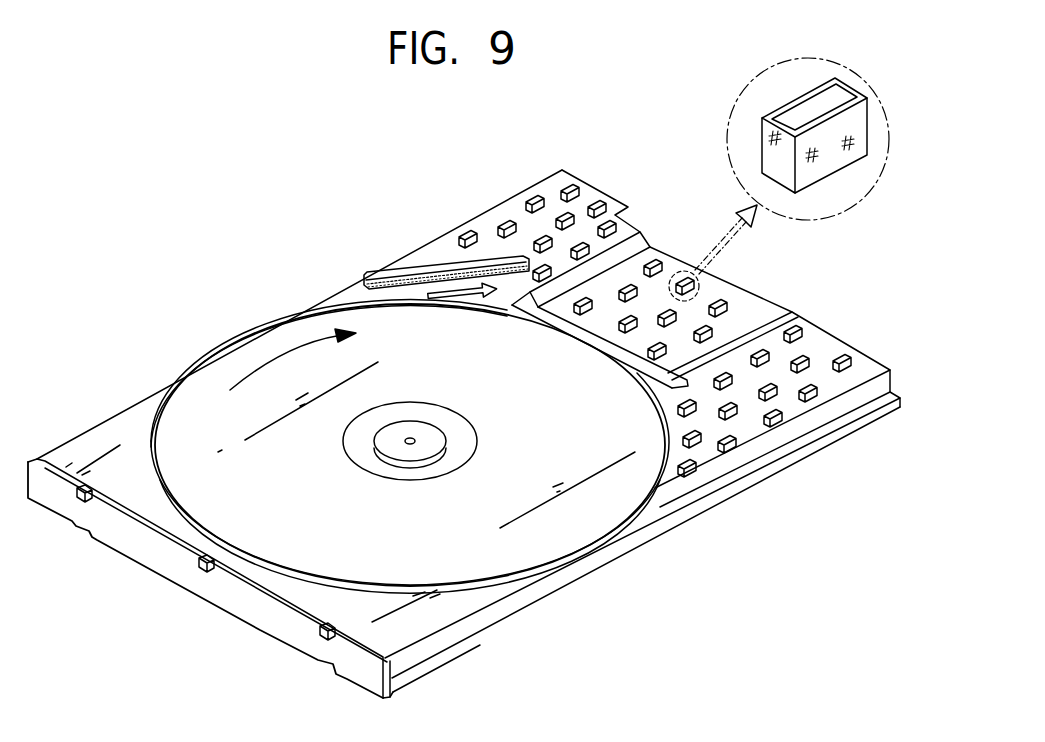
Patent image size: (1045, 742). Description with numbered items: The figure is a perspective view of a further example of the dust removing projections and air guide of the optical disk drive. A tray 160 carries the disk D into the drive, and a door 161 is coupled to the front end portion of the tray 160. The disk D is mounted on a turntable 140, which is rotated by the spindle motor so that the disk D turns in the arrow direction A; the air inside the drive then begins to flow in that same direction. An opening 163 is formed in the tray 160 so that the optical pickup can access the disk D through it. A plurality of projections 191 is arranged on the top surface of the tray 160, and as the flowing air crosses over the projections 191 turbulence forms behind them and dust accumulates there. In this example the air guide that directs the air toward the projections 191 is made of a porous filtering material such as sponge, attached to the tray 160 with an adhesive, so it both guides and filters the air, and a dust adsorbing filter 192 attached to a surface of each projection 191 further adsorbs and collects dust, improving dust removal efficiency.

The tray 160 is at (525, 603).
The door 161 is at (261, 606).
The opening 163 is at (690, 470).
The turntable 140 is at (430, 448).
The projections 191 is at (817, 104).
The dust adsorbing filter 192 is at (835, 158).
The disk D is at (209, 405).
The arrow direction A is at (293, 359).